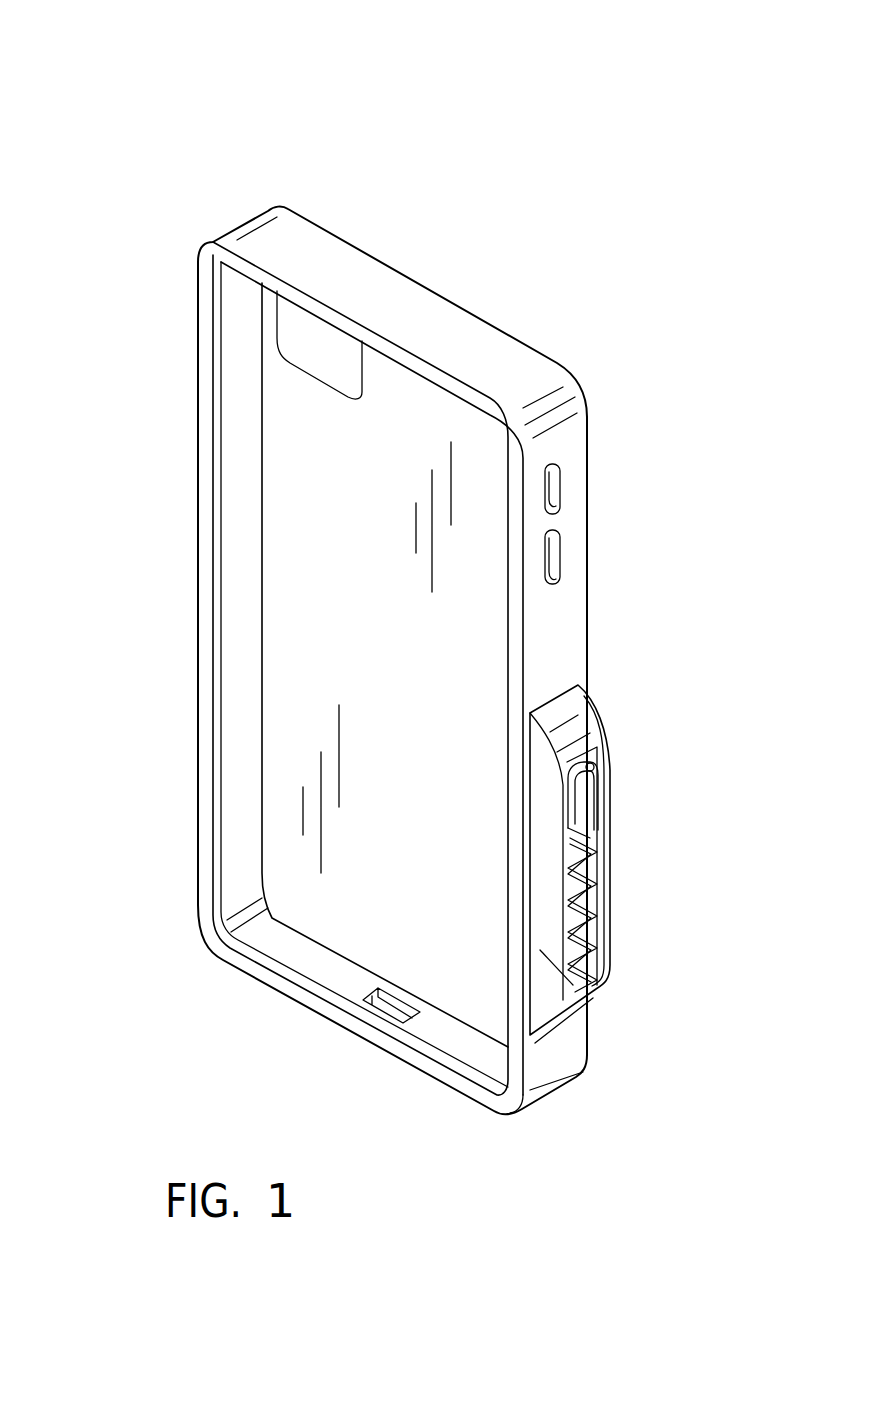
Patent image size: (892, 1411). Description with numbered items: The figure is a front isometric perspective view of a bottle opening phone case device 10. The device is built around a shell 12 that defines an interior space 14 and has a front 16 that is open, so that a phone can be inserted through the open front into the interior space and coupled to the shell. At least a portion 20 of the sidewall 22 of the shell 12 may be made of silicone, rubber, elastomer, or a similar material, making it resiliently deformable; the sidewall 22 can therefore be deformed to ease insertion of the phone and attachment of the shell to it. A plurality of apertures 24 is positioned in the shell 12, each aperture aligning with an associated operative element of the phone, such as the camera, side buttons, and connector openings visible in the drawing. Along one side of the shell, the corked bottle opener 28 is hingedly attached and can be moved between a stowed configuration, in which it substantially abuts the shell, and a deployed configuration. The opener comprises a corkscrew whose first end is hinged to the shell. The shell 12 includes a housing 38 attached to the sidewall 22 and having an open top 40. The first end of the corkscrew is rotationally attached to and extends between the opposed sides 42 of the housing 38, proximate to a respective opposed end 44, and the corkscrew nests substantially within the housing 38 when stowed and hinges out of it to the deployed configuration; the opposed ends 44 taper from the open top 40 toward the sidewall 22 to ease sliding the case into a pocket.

The bottle opening phone case device 10 is at (643, 100).
The shell 12 is at (373, 257).
The interior space 14 is at (308, 815).
The front 16 is at (293, 635).
The portion 20 is at (225, 557).
The sidewall 22 is at (558, 615).
The apertures 24 is at (390, 1000).
The corked bottle opener 28 is at (583, 855).
The housing 38 is at (610, 770).
The open top 40 is at (590, 870).
The opposed sides 42 is at (573, 985).
The opposed ends 44 is at (563, 732).